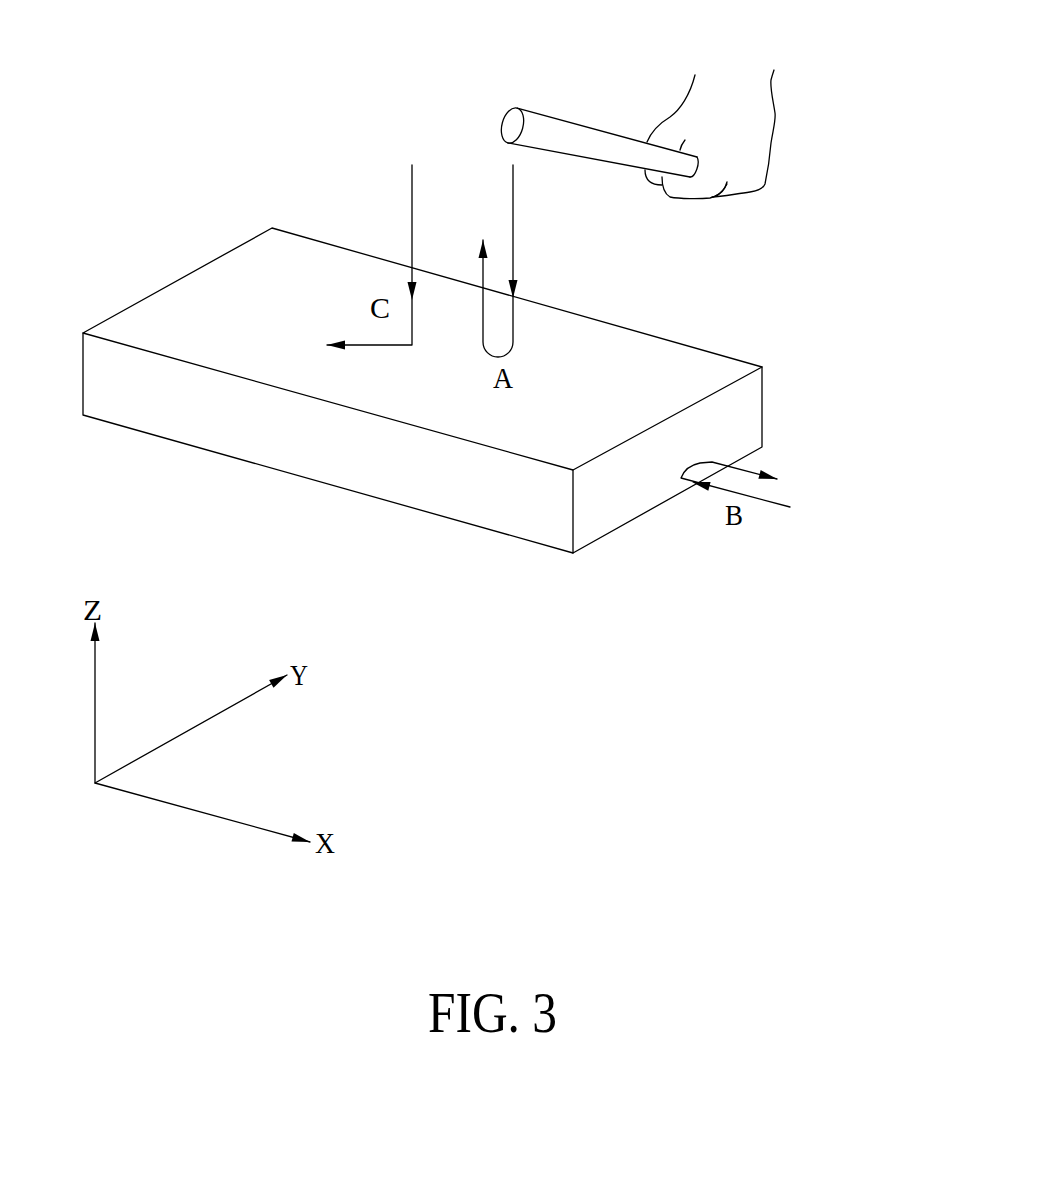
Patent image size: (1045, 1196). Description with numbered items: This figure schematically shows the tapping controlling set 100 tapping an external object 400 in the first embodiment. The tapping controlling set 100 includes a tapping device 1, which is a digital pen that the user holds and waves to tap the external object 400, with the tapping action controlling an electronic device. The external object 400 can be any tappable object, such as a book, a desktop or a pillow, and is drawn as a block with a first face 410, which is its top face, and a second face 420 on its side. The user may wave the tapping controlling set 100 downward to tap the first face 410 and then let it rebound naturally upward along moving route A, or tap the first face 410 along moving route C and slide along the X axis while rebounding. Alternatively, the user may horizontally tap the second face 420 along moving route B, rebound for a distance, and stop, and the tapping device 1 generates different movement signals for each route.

The tapping controlling set 100 is at (606, 108).
The tapping device 1 is at (585, 140).
The external object 400 is at (422, 390).
The first face 410 is at (262, 270).
The second face 420 is at (607, 518).